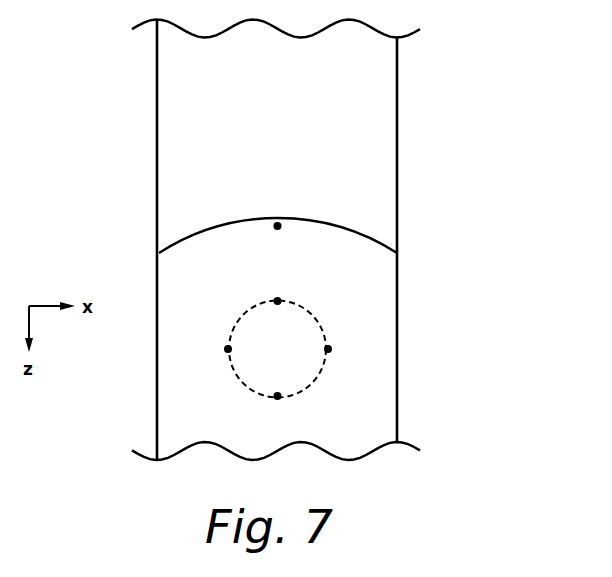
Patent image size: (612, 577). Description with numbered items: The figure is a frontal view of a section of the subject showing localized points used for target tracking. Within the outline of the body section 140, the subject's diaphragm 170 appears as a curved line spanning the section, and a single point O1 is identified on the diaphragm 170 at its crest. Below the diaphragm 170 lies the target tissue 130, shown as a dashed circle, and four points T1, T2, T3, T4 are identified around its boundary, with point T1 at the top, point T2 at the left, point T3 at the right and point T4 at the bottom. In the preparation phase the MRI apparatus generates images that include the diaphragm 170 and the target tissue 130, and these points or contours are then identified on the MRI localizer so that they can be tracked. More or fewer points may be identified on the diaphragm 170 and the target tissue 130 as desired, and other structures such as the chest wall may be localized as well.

The pipe / tubular structure 140 is at (397, 137).
The diaphragm 170 is at (197, 233).
The target tissue 130 is at (316, 320).
The origin point O1 is at (277, 212).
The point T1 is at (277, 289).
The point T2 is at (213, 353).
The point T3 is at (343, 353).
The point T4 is at (278, 411).